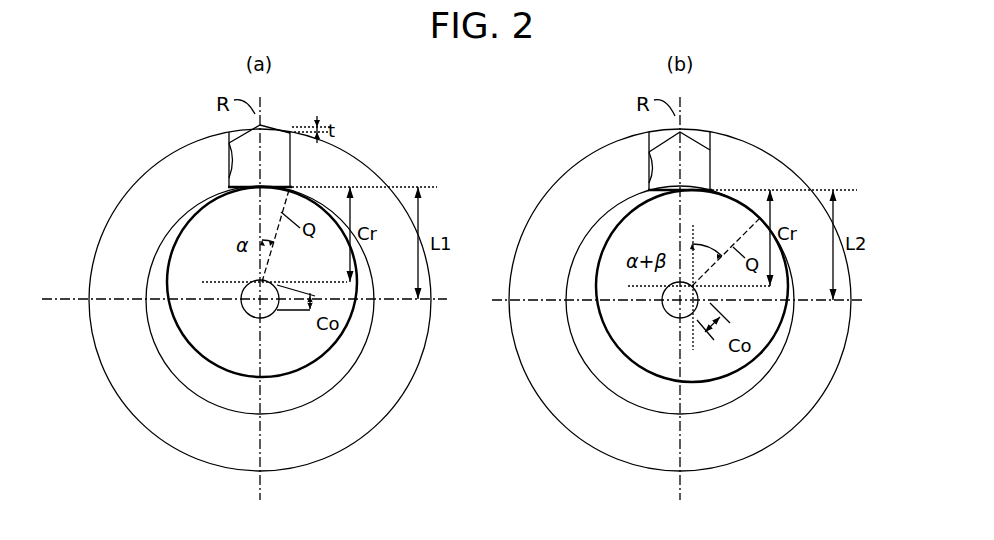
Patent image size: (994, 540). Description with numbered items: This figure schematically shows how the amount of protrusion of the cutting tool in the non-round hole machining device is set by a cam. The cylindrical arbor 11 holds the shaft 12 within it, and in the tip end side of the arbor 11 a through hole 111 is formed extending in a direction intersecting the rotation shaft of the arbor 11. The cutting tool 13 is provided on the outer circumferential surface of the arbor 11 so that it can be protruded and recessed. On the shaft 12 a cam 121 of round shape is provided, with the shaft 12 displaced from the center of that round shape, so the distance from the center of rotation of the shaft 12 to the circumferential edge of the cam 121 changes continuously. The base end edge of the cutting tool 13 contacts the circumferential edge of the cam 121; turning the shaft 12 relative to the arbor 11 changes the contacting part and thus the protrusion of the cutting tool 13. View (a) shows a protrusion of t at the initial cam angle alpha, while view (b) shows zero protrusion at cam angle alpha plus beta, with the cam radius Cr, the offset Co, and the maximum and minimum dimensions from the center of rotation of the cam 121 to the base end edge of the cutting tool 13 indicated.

The arbor 11 is at (156, 185).
The through hole 111 is at (229, 140).
The shaft 12 is at (271, 315).
The cam 121 is at (160, 256).
The cutting tool 13 is at (273, 150).